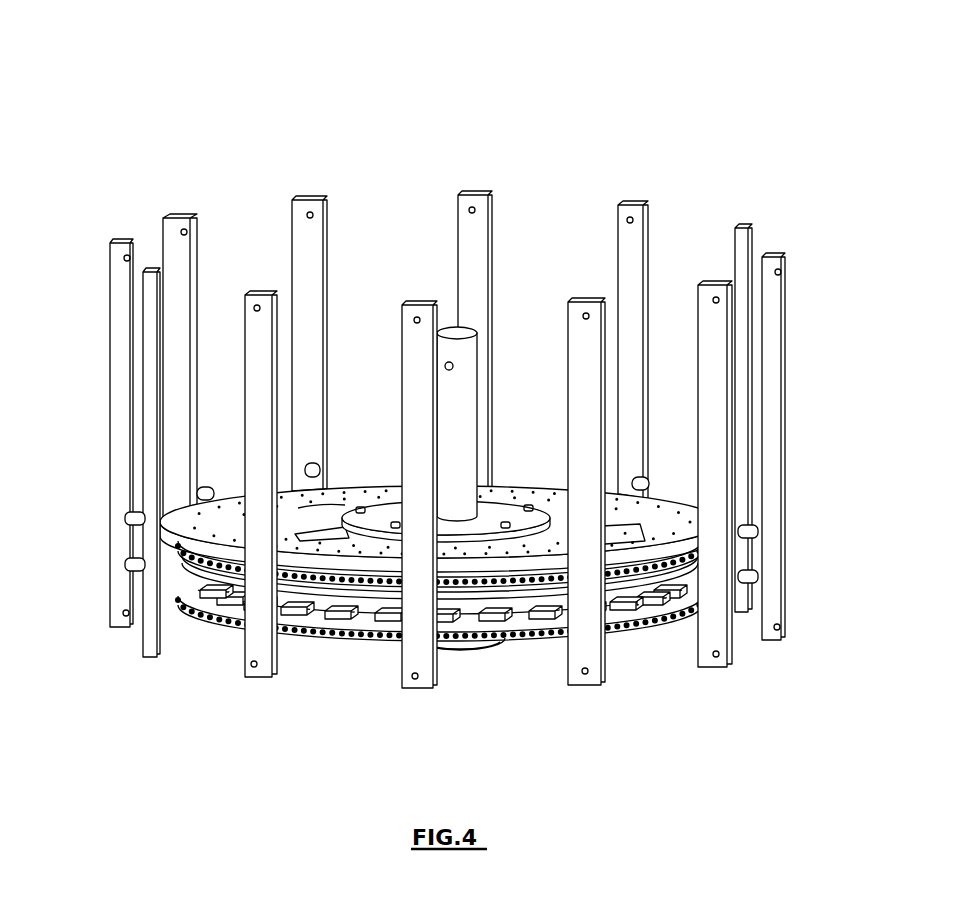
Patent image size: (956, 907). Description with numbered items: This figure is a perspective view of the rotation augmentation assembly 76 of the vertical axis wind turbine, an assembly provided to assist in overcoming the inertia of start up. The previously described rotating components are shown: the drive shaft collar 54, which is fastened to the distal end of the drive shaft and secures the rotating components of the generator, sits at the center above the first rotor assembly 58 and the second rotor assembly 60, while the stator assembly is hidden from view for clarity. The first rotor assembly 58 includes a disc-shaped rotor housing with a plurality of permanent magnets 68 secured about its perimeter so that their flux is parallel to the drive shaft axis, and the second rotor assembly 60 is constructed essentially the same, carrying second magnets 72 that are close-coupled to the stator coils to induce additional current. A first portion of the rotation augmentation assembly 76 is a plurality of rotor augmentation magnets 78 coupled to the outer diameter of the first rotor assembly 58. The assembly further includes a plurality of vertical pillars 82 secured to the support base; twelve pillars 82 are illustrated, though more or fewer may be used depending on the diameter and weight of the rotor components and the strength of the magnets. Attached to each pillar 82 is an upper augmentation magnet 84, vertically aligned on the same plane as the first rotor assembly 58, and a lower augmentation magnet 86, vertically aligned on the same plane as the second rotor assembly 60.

The drive shaft collar 54 is at (462, 402).
The rotor assembly 58 is at (560, 487).
The second rotor assembly 60 is at (507, 630).
The permanent magnets 68 is at (480, 653).
The second magnets 72 is at (377, 620).
The rotation augmentation assembly 76 is at (624, 80).
The rotor augmentation magnets 78 is at (220, 613).
The vertical pillars 82 is at (318, 235).
The upper augmentation magnet 84 is at (312, 466).
The lower augmentation magnet 86 is at (127, 566).